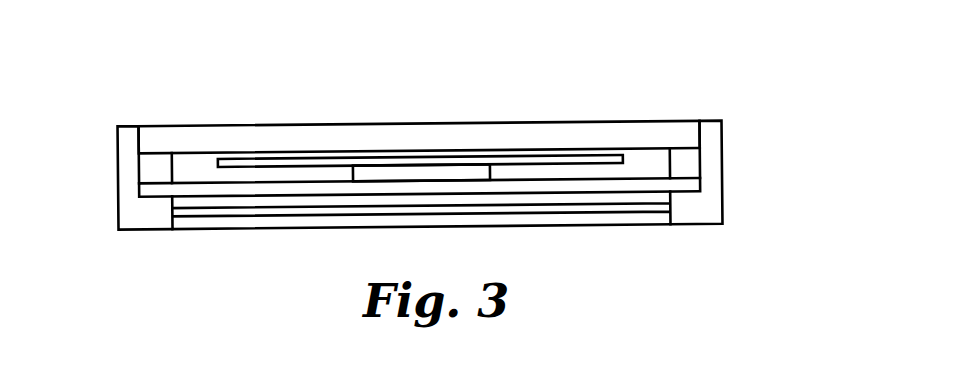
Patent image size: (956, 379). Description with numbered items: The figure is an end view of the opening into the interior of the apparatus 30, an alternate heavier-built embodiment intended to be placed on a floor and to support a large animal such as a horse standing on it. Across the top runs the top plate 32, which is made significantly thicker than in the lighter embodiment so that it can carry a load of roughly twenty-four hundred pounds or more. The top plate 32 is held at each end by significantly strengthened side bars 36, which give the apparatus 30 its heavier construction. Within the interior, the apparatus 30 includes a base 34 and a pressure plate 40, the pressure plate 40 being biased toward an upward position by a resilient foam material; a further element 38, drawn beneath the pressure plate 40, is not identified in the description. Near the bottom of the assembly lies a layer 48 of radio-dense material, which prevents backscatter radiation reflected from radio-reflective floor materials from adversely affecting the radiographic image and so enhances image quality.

The apparatus 30 is at (590, 58).
The top plate 32 is at (419, 122).
The base 34 is at (152, 197).
The side bars 36 is at (118, 176).
The chip / component 38 is at (490, 171).
The pressure plate 40 is at (260, 158).
The layer of radio-dense material 48 is at (330, 210).